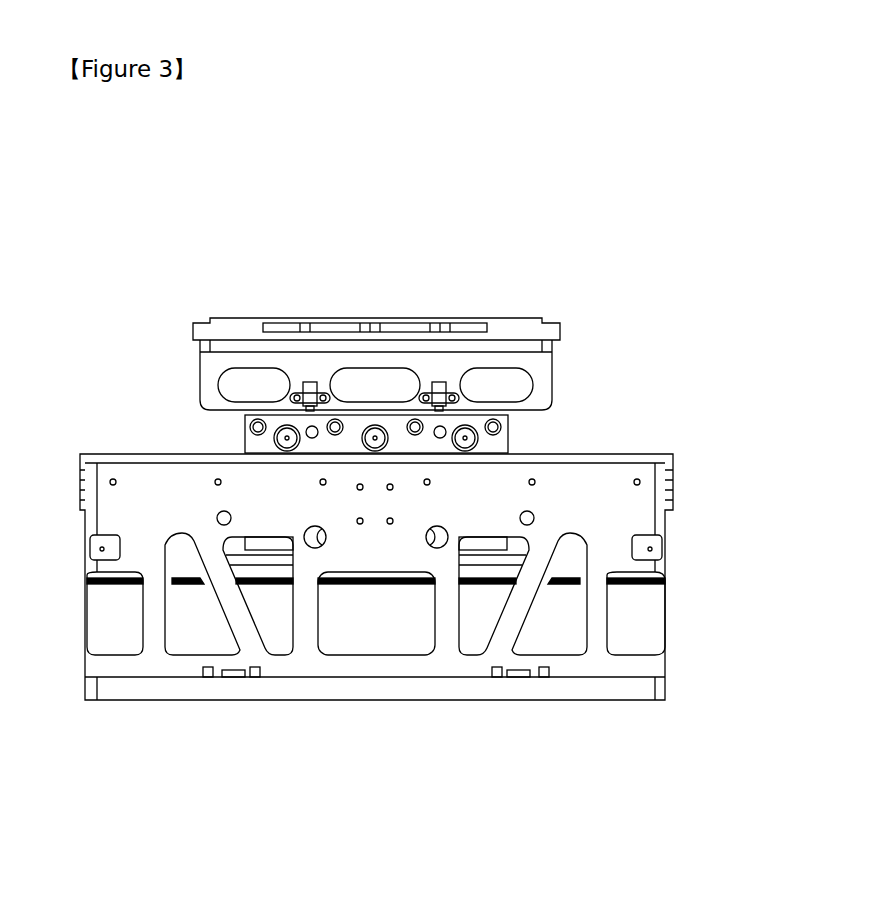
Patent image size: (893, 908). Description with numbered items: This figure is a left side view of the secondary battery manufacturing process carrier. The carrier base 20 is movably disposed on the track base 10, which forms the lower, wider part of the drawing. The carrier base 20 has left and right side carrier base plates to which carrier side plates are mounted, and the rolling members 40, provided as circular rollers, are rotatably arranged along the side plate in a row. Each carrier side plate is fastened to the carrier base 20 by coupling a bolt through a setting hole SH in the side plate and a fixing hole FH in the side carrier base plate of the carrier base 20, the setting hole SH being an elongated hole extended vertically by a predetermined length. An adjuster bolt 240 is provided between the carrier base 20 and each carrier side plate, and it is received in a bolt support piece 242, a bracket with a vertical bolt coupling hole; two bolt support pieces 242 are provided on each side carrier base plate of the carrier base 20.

The track base 10 is at (688, 518).
The carrier base 20 is at (188, 353).
The rolling member 40 is at (262, 434).
The adjuster bolt 240 is at (304, 368).
The bolt support piece 242 is at (327, 380).
The fixing hole FH is at (338, 419).
The setting hole SH is at (335, 436).